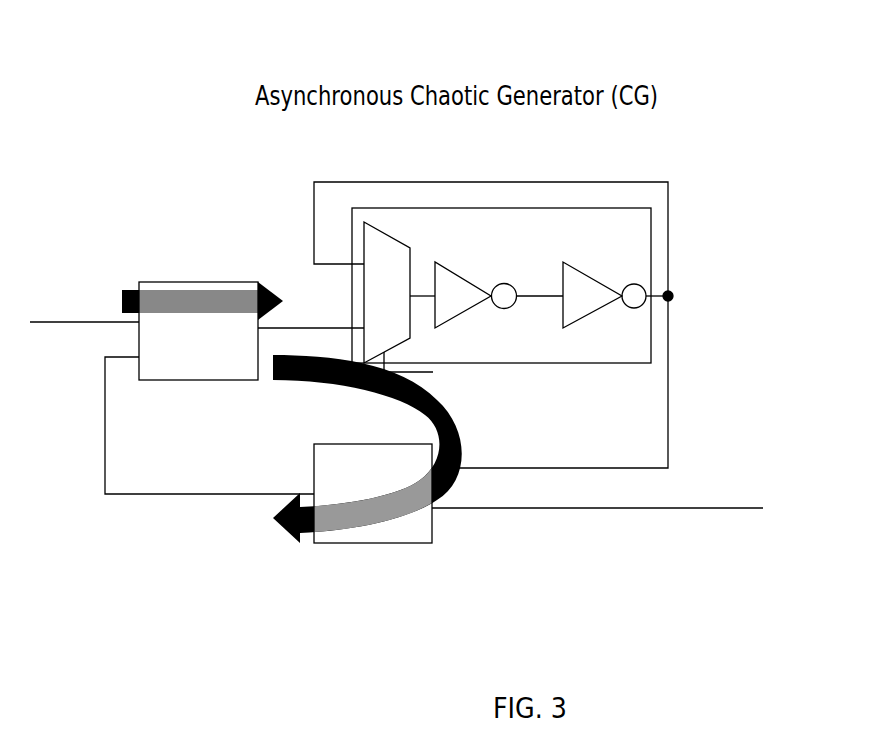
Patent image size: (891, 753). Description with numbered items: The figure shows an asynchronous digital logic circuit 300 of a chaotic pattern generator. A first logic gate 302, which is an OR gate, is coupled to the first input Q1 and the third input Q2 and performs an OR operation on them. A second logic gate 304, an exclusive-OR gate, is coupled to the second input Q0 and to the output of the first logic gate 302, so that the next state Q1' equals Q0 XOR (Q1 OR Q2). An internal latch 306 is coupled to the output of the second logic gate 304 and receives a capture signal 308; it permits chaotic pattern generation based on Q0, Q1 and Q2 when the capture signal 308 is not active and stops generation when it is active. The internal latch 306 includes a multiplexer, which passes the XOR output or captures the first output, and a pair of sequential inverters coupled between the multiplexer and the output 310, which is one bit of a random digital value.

The asynchronous digital logic circuit 300 is at (99, 70).
The first logic gate 302 is at (385, 544).
The second logic gate 304 is at (195, 381).
The internal latch 306 is at (541, 251).
The capture signal 308 is at (508, 306).
The output 310 is at (741, 301).